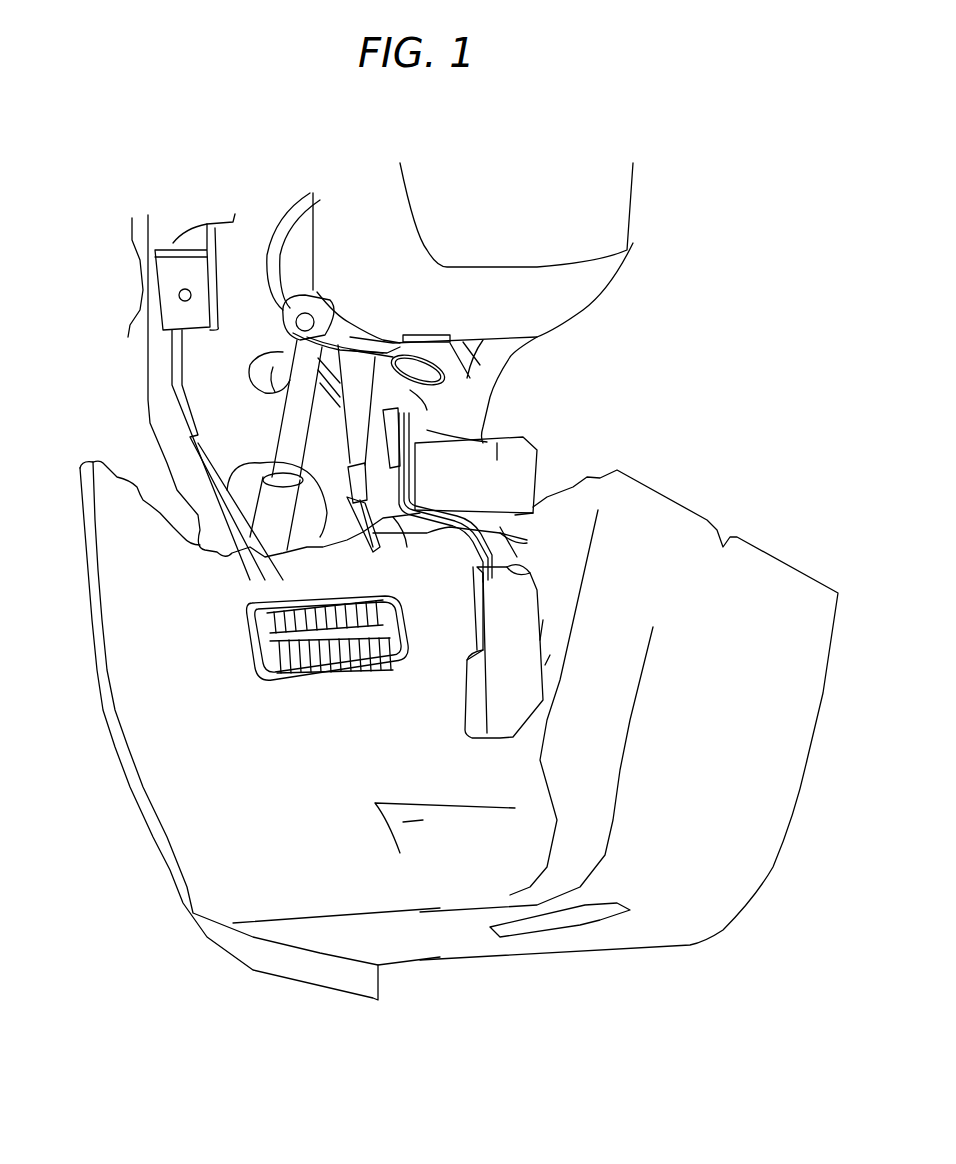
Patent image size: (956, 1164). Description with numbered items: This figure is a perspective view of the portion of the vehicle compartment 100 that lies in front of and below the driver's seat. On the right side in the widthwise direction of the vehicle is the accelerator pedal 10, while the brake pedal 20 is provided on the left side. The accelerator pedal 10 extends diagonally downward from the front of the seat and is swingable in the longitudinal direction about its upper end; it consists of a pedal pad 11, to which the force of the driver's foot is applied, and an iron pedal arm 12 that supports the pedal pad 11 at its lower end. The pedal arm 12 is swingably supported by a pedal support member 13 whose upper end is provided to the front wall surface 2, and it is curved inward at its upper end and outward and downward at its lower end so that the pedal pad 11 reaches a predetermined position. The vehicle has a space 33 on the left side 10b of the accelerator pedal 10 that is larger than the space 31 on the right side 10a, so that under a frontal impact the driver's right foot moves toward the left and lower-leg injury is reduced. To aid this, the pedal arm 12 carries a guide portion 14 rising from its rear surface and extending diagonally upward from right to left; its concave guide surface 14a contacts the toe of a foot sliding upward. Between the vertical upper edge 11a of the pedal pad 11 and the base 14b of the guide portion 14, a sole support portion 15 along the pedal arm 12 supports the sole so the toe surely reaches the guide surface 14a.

The vehicle compartment 100 is at (138, 877).
The front wall surface 2 is at (123, 527).
The brake pedal 20 is at (247, 673).
The pedal support member 13 is at (400, 397).
The accelerator pedal 10 is at (463, 717).
The right side 10a is at (543, 620).
The left side 10b is at (475, 580).
The pedal pad 11 is at (530, 687).
The vertical upper edge 11a is at (513, 577).
The pedal arm 12 is at (458, 527).
The guide portion 14 is at (540, 458).
The guide surface 14a is at (497, 460).
The base 14b is at (533, 513).
The sole support portion 15 is at (500, 538).
The space 31 is at (550, 655).
The space 33 is at (453, 633).